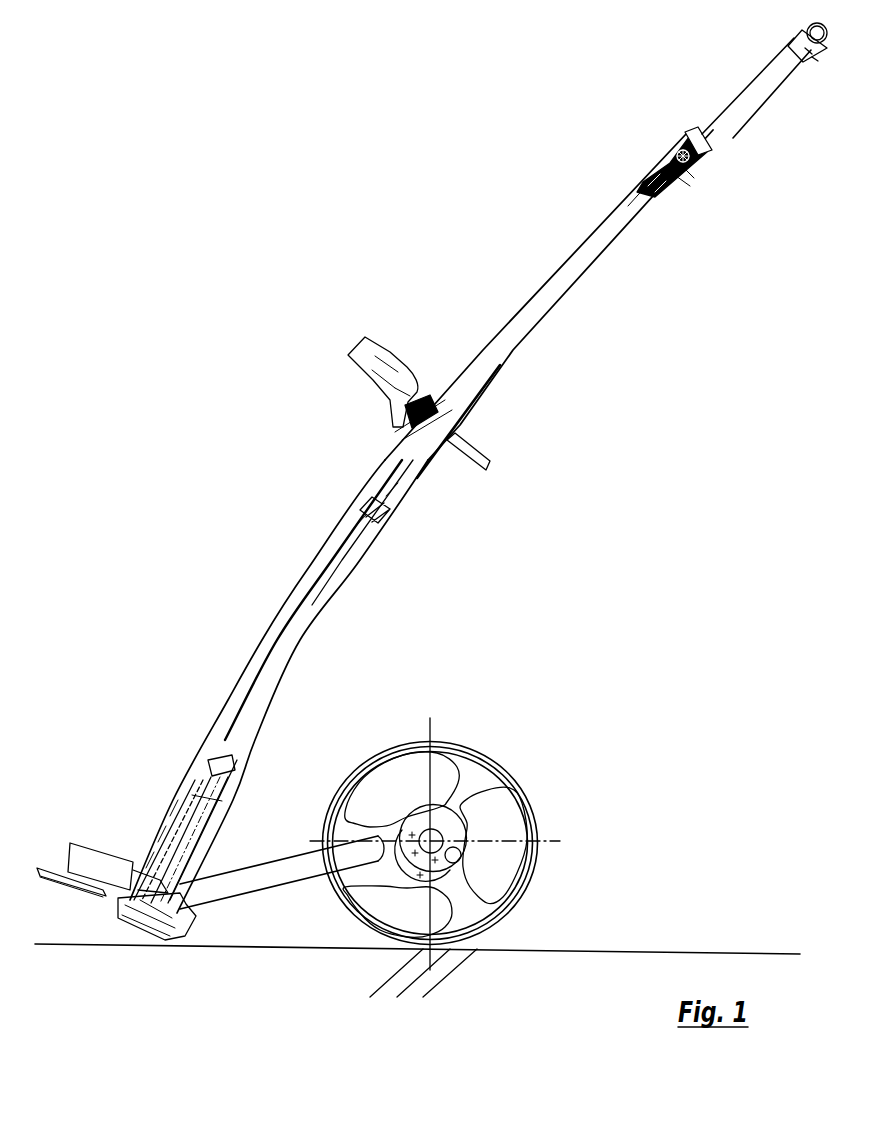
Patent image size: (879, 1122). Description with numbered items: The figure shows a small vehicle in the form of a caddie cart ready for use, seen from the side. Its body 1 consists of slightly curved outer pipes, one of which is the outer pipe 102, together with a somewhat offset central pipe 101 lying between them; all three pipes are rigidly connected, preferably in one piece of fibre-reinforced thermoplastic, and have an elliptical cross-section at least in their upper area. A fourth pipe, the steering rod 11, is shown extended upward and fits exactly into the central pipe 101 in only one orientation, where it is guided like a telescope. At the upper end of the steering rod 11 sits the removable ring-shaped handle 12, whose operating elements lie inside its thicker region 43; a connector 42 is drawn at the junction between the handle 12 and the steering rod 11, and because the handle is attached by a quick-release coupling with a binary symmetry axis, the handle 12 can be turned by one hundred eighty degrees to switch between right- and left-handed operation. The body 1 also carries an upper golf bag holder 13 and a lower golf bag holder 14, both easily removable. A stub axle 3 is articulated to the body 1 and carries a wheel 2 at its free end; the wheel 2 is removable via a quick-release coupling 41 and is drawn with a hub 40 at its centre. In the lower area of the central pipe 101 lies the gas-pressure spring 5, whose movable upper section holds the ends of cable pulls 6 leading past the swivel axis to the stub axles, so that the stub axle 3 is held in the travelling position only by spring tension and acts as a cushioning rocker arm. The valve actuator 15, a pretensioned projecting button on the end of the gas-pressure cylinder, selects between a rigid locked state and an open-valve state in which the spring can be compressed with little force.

The body 1 is at (307, 520).
The wheel 2 is at (485, 774).
The stub axle 3 is at (235, 892).
The gas-pressure spring 5 is at (197, 805).
The cable pull 6 is at (178, 832).
The steering rod 11 is at (570, 263).
The handle 12 is at (733, 105).
The upper golf bag holder 13 is at (363, 360).
The lower golf bag holder 14 is at (90, 850).
The valve actuator 15 is at (232, 756).
The hub 40 is at (450, 809).
The quick-release coupling 41 is at (410, 784).
The clamp 42 is at (668, 149).
The thicker region 43 is at (790, 43).
The central pipe 101 is at (336, 593).
The outer pipe 102 is at (242, 684).